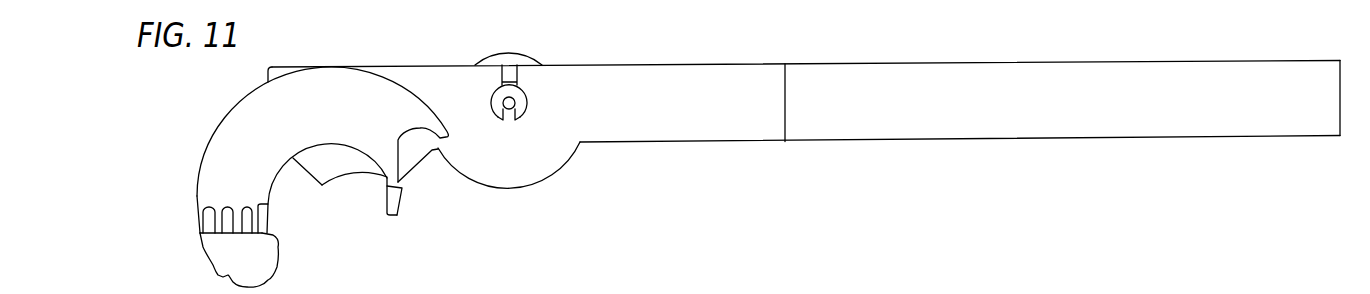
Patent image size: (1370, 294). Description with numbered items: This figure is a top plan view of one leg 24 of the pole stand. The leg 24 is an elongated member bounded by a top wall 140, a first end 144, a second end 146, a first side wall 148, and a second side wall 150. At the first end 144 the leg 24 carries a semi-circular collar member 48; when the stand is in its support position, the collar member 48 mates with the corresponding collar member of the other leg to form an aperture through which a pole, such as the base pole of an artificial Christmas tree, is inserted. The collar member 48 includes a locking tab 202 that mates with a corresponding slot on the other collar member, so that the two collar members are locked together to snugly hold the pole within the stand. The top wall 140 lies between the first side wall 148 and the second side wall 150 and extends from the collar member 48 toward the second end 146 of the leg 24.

The leg 24 is at (806, 103).
The semi-circular collar member 48 is at (216, 146).
The top wall 140 is at (929, 113).
The first end 144 is at (426, 75).
The second end 146 is at (1330, 138).
The first side wall 148 is at (742, 141).
The second side wall 150 is at (718, 64).
The locking tab 202 is at (397, 215).